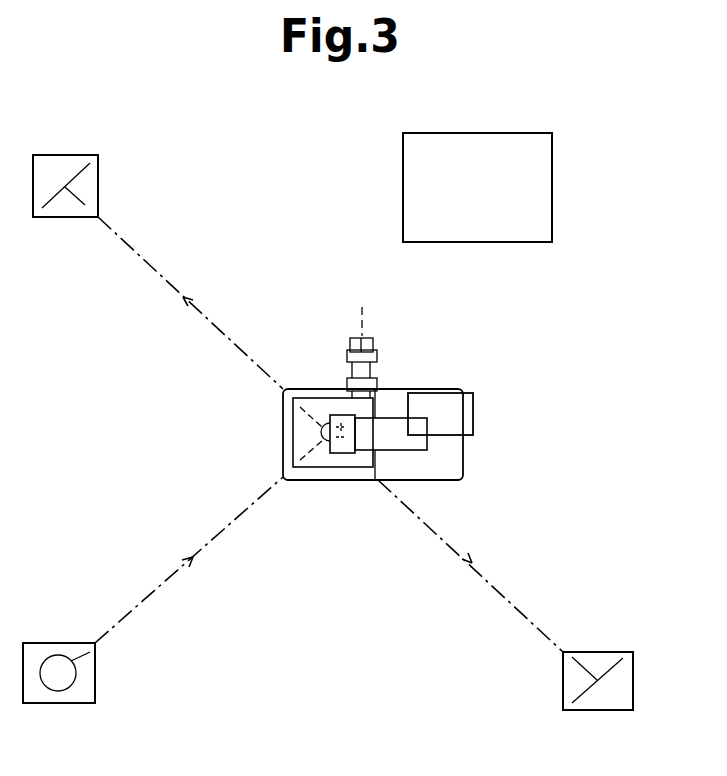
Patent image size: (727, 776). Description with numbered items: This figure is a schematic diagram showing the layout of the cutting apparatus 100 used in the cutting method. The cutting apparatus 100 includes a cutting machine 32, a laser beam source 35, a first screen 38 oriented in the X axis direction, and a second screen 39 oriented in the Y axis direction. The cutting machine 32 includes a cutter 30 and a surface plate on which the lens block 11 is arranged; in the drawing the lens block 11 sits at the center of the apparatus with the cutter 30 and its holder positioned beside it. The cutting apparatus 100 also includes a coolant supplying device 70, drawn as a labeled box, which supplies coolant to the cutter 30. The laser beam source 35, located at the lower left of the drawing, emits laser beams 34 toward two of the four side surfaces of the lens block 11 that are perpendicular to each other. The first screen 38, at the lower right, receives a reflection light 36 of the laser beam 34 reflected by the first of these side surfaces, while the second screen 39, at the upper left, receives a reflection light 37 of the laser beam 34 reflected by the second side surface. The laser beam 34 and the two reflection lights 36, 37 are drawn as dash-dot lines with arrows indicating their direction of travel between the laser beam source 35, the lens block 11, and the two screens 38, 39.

The cutting apparatus 100 is at (640, 155).
The coolant supplying device 70 is at (553, 215).
The lens block 11 is at (333, 413).
The cutter 30 is at (320, 430).
The cutting machine 32 is at (441, 384).
The laser beam 34 is at (213, 537).
The laser beam source 35 is at (77, 673).
The reflection light 36 is at (515, 602).
The reflection light 37 is at (160, 277).
The first screen 38 is at (613, 667).
The second screen 39 is at (57, 200).